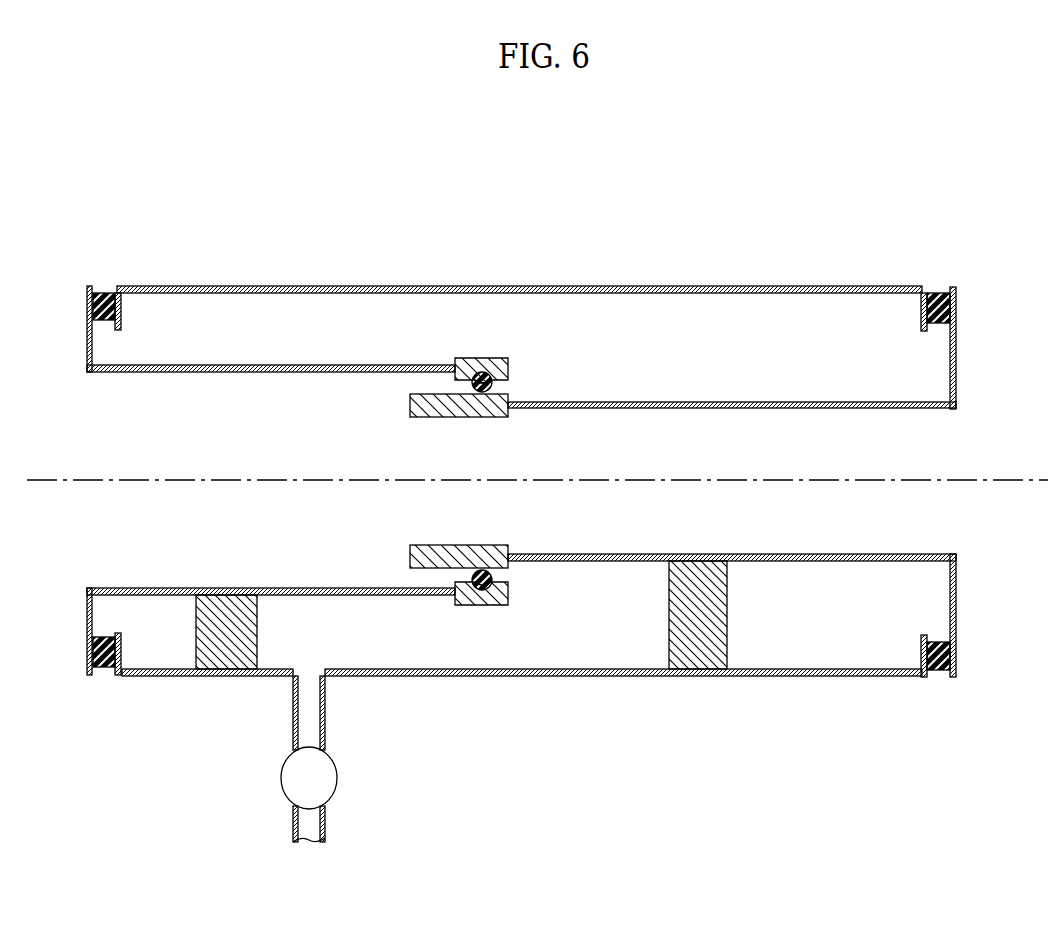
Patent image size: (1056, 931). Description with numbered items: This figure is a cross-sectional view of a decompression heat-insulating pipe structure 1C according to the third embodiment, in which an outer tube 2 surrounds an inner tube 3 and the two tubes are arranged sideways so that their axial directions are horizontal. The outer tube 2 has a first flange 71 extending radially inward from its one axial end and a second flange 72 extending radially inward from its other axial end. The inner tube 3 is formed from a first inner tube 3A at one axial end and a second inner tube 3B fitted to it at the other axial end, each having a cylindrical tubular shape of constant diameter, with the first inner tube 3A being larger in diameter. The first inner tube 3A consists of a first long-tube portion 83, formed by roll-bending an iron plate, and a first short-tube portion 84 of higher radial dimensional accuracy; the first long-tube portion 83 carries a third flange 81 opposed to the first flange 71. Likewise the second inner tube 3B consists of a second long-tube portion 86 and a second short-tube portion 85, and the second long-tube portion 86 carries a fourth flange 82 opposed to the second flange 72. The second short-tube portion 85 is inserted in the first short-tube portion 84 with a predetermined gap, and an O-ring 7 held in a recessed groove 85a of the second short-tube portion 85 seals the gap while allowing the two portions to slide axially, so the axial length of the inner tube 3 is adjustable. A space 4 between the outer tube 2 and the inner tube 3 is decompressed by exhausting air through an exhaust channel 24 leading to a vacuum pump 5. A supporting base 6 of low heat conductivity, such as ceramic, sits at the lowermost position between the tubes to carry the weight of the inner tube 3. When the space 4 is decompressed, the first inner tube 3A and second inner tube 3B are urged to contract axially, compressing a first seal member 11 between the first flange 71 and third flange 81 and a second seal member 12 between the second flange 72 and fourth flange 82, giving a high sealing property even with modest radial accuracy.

The decompression heat-insulating pipe structure 1C is at (830, 173).
The outer tube 2 is at (619, 284).
The inner tube 3 is at (521, 385).
The first inner tube 3A is at (683, 470).
The second inner tube 3B is at (336, 416).
The space 4 is at (725, 352).
The vacuum pump 5 is at (330, 783).
The supporting base 6 is at (229, 656).
The O-ring 7 is at (487, 372).
The first seal member 11 is at (940, 293).
The second seal member 12 is at (105, 292).
The exhaust channel 24 is at (325, 715).
The first flange 71 is at (921, 312).
The second flange 72 is at (122, 316).
The third flange 81 is at (957, 306).
The fourth flange 82 is at (87, 301).
The first long-tube portion 83 is at (590, 410).
The first short-tube portion 84 is at (498, 411).
The second short-tube portion 85 is at (412, 396).
The recessed groove 85a is at (492, 378).
The second long-tube portion 86 is at (313, 373).